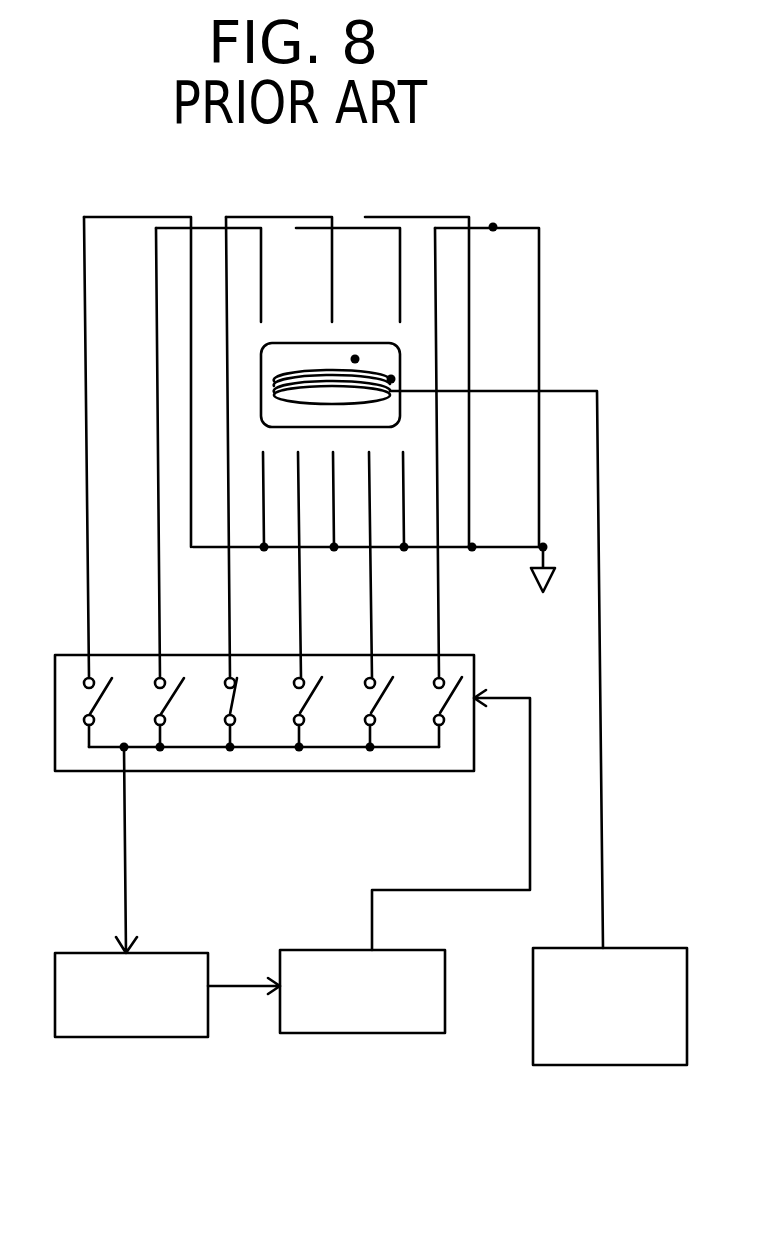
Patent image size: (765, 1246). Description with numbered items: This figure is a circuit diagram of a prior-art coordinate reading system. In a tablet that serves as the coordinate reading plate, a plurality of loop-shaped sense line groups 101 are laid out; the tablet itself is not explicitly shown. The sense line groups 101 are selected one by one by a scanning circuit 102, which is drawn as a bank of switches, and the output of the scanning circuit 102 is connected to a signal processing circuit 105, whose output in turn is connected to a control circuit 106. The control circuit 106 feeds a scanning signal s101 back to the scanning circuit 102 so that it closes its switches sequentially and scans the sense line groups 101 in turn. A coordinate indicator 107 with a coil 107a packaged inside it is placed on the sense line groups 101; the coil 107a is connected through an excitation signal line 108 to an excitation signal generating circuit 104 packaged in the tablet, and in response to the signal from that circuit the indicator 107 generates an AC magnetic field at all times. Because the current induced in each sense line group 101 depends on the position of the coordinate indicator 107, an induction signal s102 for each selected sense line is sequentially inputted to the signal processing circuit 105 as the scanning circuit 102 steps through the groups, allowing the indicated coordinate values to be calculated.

The sense line groups 101 is at (493, 227).
The scanning circuit 102 is at (147, 760).
The excitation signal generating circuit 104 is at (560, 1065).
The signal processing circuit 105 is at (80, 1037).
The control circuit 106 is at (315, 1033).
The coordinate indicator 107 is at (355, 359).
The coil 107a is at (391, 379).
The excitation signal line 108 is at (602, 570).
The scanning signal s101 is at (530, 769).
The induction signal s102 is at (126, 888).